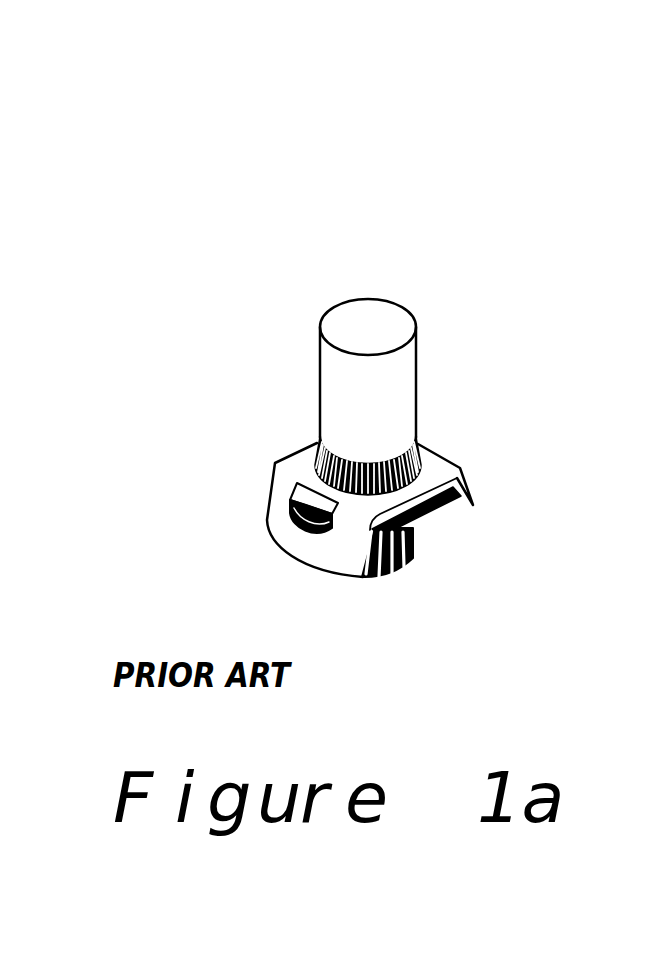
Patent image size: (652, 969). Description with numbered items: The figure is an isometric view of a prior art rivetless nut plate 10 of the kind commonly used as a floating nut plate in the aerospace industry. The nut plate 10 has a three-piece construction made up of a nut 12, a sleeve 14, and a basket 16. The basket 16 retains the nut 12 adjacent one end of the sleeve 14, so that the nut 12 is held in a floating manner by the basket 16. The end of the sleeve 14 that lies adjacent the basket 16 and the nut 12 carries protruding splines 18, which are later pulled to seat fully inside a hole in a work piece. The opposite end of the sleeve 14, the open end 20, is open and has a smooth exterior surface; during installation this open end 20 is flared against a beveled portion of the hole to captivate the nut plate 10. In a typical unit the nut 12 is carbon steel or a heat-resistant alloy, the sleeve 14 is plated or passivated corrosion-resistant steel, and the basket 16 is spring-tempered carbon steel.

The rivetless nut plate 10 is at (582, 140).
The nut 12 is at (413, 543).
The sleeve 14 is at (400, 383).
The basket 16 is at (278, 498).
The splines 18 is at (420, 440).
The open end of sleeve 20 is at (322, 317).